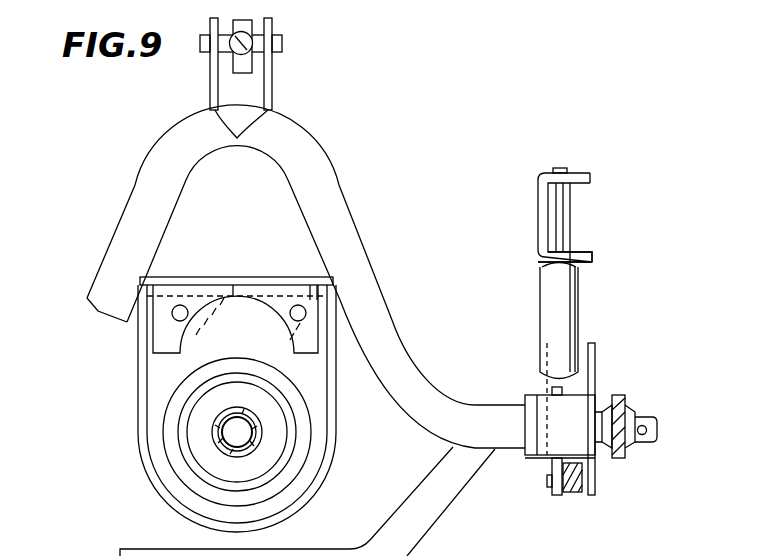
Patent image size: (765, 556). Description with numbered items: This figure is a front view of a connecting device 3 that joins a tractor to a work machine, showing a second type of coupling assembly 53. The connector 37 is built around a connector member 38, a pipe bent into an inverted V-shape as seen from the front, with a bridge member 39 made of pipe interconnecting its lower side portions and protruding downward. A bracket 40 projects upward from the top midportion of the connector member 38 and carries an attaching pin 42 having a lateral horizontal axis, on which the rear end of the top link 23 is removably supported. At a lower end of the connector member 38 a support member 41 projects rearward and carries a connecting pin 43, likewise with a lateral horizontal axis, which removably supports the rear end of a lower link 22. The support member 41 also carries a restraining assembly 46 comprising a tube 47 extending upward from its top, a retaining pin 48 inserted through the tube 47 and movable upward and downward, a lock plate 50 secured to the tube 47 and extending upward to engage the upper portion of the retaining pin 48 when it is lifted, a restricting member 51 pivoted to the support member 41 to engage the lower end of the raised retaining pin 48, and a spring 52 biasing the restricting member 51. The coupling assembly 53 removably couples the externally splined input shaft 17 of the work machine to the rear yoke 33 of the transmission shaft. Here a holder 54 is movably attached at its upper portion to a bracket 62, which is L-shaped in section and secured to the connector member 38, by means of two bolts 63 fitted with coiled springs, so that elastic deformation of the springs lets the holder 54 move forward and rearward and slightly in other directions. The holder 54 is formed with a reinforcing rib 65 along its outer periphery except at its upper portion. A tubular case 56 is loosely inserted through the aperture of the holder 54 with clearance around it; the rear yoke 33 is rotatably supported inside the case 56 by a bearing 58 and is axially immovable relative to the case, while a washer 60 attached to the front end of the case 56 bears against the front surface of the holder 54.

The connecting device 3 is at (367, 192).
The input shaft 17 is at (243, 432).
The lower link 22 is at (615, 395).
The top link 23 is at (248, 54).
The rear yoke 33 is at (246, 407).
The connector 37 is at (372, 263).
The connector member 38 is at (393, 355).
The bridge member 39 is at (153, 549).
The bracket 40 is at (241, 139).
The support member 41 is at (560, 420).
The attaching pin 42 is at (283, 44).
The connecting pin 43 is at (650, 443).
The restraining assembly 46 is at (583, 305).
The tube 47 is at (571, 332).
The retaining pin 48 is at (567, 253).
The lock plate 50 is at (560, 217).
The restricting member 51 is at (555, 490).
The spring 52 is at (580, 490).
The coupling assembly 53 is at (143, 478).
The holder 54 is at (148, 412).
The tubular case 56 is at (279, 465).
The bearing 58 is at (243, 465).
The washer 60 is at (310, 450).
The bracket 62 is at (252, 290).
The bolt 63 is at (180, 305).
The reinforcing rib 65 is at (140, 453).